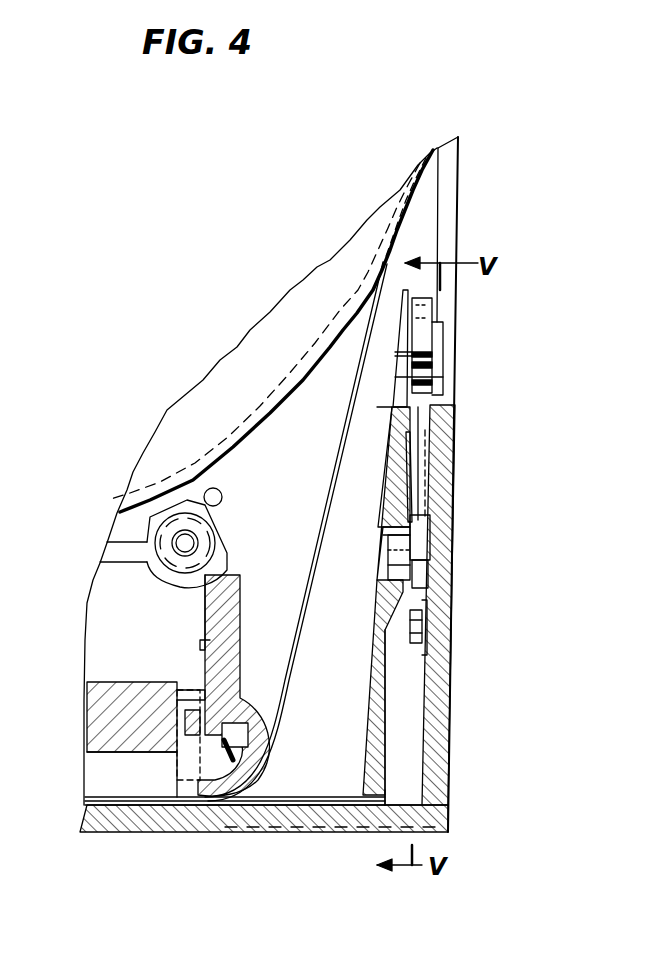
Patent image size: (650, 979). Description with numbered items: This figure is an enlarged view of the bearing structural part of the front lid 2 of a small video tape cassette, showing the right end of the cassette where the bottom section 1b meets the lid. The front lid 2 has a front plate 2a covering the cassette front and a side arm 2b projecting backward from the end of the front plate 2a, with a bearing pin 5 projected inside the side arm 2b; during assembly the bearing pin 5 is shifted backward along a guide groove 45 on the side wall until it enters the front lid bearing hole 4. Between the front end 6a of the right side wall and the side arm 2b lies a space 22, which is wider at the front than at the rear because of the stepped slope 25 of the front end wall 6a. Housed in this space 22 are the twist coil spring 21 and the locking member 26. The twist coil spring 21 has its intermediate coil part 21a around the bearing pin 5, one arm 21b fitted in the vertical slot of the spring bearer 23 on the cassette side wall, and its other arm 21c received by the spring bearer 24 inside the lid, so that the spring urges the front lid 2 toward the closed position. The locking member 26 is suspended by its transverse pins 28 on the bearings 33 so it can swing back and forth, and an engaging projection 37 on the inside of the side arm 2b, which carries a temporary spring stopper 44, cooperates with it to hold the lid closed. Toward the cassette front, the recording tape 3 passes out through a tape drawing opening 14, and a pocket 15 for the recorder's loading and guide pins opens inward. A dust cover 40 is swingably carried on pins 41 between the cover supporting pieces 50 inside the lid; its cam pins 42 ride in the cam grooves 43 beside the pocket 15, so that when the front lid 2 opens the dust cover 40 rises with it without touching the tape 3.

The bottom section 1b is at (462, 207).
The front lid 2 is at (118, 834).
The front plate 2a is at (253, 820).
The side arm 2b is at (440, 690).
The recording tape 3 is at (305, 606).
The front lid bearing hole 4 is at (386, 530).
The bearing pin 5 is at (397, 550).
The front end of right side wall 6a is at (372, 690).
The tape drawing opening 14 is at (294, 790).
The pocket 15 is at (116, 606).
The twist coil spring 21 is at (432, 588).
The intermediate coil part 21a is at (432, 518).
The one arm of twist coil spring 21b is at (402, 472).
The other arm of twist coil spring 21c is at (424, 630).
The space 22 is at (417, 770).
The spring bearer 23 is at (406, 440).
The spring bearer 24 is at (414, 646).
The stepped slope 25 is at (361, 711).
The locking member 26 is at (438, 360).
The transverse pins 28 is at (412, 376).
The bearings 33 is at (398, 355).
The engaging projection 37 is at (424, 490).
The dust cover 40 is at (143, 695).
The pins for dust cover 41 is at (175, 752).
The cam pins 42 is at (206, 672).
The cam grooves 43 is at (206, 640).
The temporary spring stopper 44 is at (428, 478).
The guide grooves 45 is at (385, 752).
The cover supporting pieces 50 is at (195, 765).